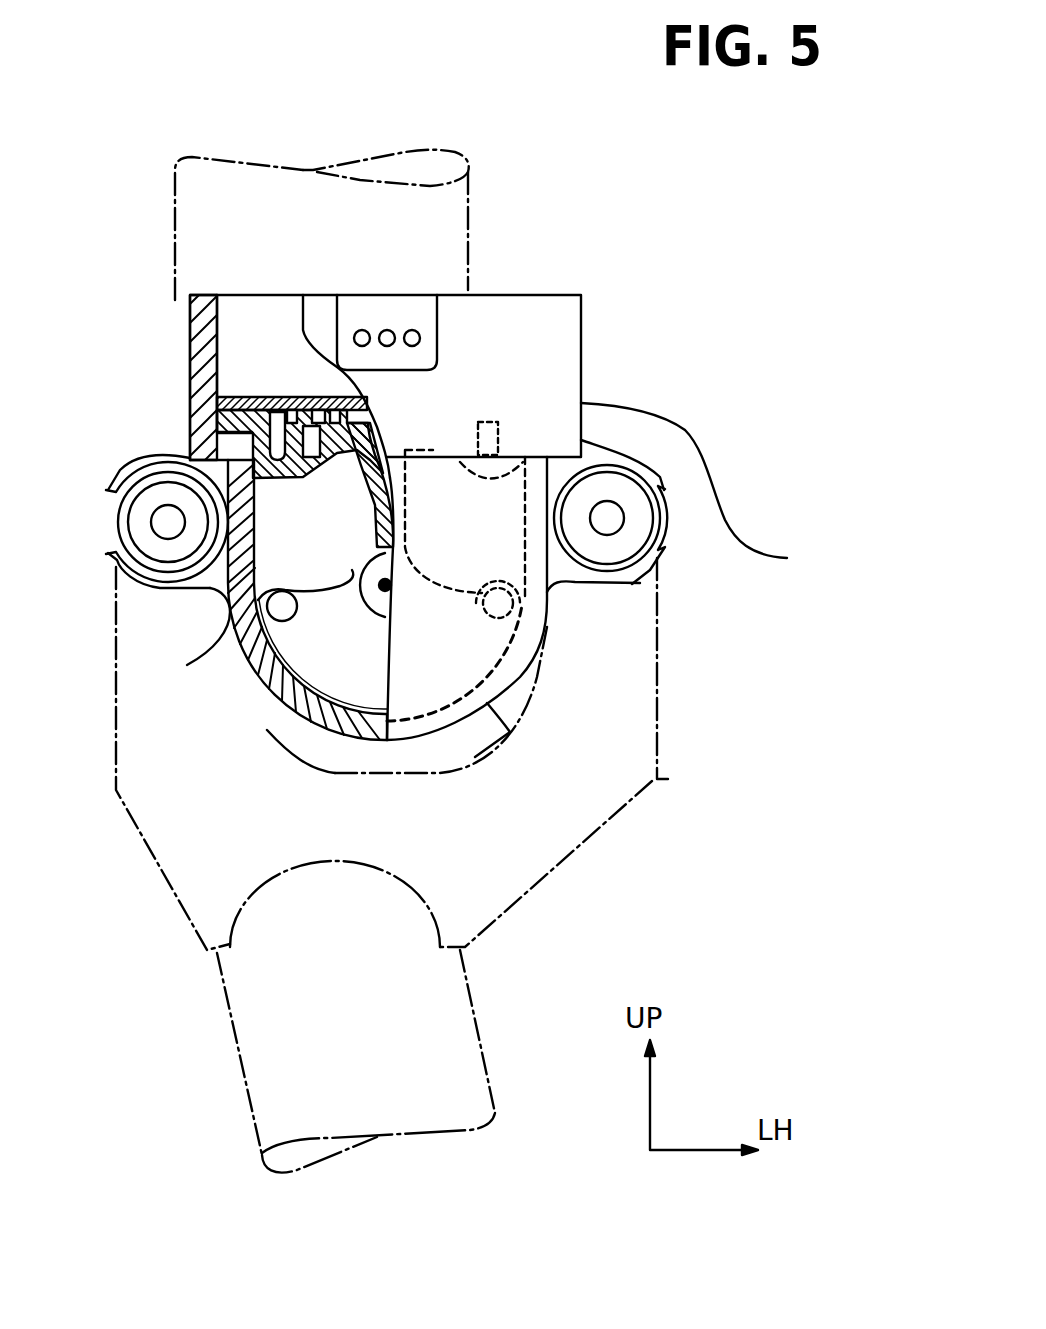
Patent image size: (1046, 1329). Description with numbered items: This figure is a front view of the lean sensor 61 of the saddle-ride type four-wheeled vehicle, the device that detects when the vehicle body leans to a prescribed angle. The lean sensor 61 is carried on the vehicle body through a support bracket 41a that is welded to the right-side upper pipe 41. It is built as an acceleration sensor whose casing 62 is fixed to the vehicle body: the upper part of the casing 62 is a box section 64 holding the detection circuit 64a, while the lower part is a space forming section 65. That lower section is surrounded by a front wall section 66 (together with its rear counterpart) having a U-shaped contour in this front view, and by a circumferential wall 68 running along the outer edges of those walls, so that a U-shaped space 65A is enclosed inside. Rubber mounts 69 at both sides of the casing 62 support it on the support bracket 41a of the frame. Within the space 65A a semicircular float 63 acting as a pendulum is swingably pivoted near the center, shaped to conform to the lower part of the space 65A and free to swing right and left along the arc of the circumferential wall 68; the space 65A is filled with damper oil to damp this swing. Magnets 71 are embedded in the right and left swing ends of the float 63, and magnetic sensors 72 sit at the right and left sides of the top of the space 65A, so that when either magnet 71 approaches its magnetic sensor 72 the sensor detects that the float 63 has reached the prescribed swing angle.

The lean sensor 61 is at (582, 292).
The casing 62 is at (834, 545).
The float 63 is at (237, 687).
The box section 64 is at (468, 493).
The detection circuit 64a is at (265, 325).
The space forming section 65 is at (520, 677).
The space 65A is at (184, 645).
The front wall section 66 is at (462, 672).
The circumferential wall 68 is at (510, 732).
The rubber mounts 69 is at (120, 473).
The magnets 71 is at (278, 621).
The magnetic sensors 72 is at (275, 425).
The upper pipe 41 is at (473, 1007).
The support bracket 41a is at (668, 779).